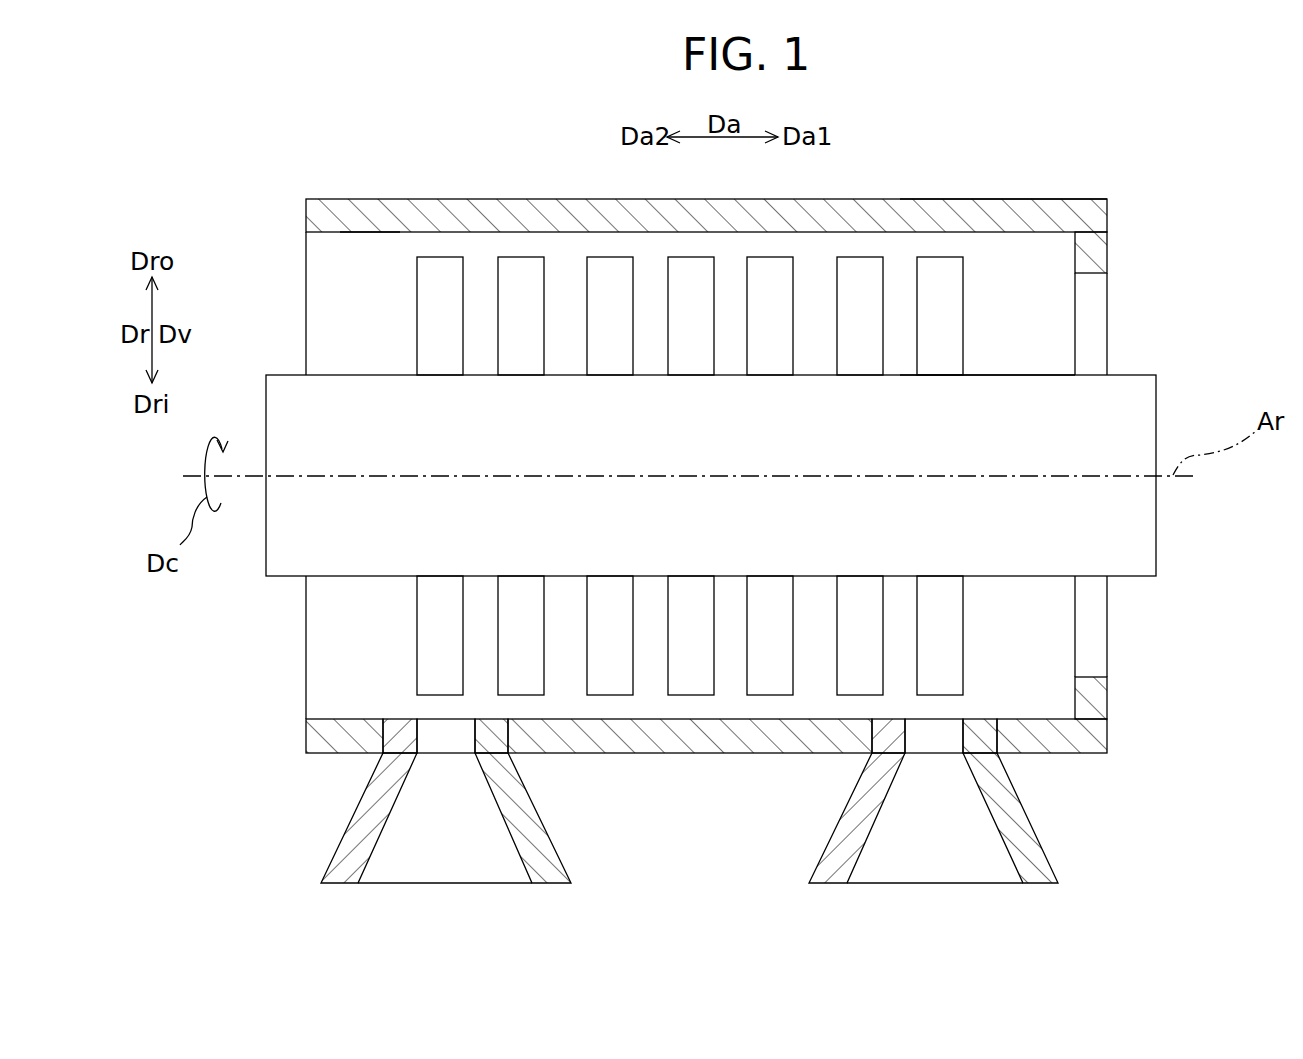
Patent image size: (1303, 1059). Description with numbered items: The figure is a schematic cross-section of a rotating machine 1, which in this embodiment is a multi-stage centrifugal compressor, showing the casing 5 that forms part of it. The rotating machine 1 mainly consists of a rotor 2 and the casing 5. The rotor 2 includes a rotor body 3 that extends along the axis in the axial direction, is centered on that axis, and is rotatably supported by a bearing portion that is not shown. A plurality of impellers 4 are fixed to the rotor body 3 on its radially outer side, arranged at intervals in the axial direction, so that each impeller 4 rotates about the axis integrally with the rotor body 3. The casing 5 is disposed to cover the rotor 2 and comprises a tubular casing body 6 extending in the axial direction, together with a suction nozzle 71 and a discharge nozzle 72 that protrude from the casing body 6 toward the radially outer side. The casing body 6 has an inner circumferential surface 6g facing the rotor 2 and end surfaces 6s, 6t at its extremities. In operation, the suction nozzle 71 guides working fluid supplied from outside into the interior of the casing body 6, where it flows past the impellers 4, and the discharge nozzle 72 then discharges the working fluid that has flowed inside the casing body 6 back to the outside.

The rotating machine 1 is at (1092, 172).
The rotor 2 is at (1060, 370).
The rotor body 3 is at (1000, 390).
The impeller 4 is at (603, 268).
The casing 5 is at (1013, 188).
The casing body 6 is at (965, 213).
The end surface 6t is at (305, 218).
The inner circumferential surface 6g is at (367, 233).
The end surface 6s is at (1108, 232).
The suction nozzle 71 is at (538, 823).
The discharge nozzle 72 is at (1018, 817).